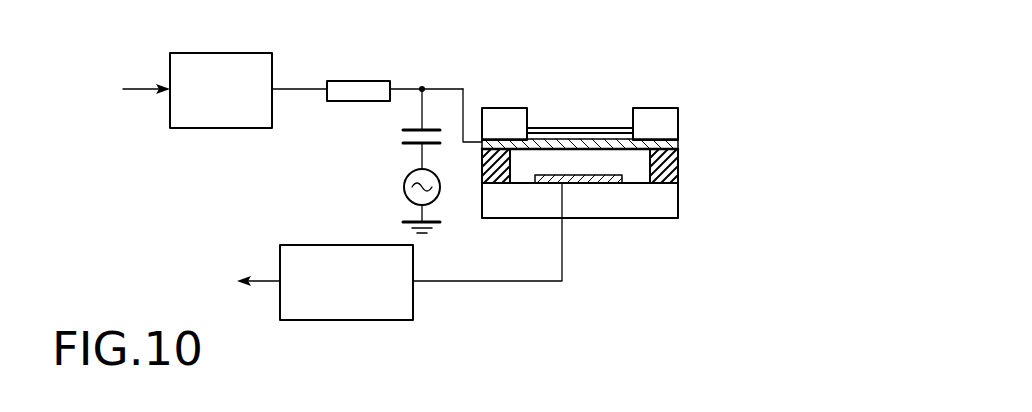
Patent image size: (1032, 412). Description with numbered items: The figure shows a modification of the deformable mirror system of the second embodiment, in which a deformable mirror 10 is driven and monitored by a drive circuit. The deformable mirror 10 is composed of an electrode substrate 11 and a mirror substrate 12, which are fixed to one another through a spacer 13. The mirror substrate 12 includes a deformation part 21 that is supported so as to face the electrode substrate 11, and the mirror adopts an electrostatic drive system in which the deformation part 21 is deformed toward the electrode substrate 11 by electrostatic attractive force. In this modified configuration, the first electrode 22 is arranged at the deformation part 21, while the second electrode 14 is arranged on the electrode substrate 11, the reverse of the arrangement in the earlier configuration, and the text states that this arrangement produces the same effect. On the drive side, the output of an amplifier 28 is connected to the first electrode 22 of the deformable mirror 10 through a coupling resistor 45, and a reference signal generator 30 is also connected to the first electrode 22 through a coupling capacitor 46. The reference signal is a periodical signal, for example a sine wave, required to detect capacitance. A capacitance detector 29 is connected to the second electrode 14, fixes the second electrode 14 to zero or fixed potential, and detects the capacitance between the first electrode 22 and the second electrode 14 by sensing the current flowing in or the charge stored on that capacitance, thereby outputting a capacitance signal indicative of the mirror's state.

The deformable mirror 10 is at (606, 140).
The electrode substrate 11 is at (660, 200).
The mirror substrate 12 is at (679, 125).
The spacer 13 is at (679, 170).
The second electrode 14 is at (577, 184).
The deformation part 21 is at (549, 122).
The first electrode 22 is at (603, 143).
The amplifier 28 is at (228, 53).
The capacitance detector 29 is at (365, 321).
The reference signal generator 30 is at (404, 187).
The coupling resistor 45 is at (359, 81).
The coupling capacitor 46 is at (402, 137).